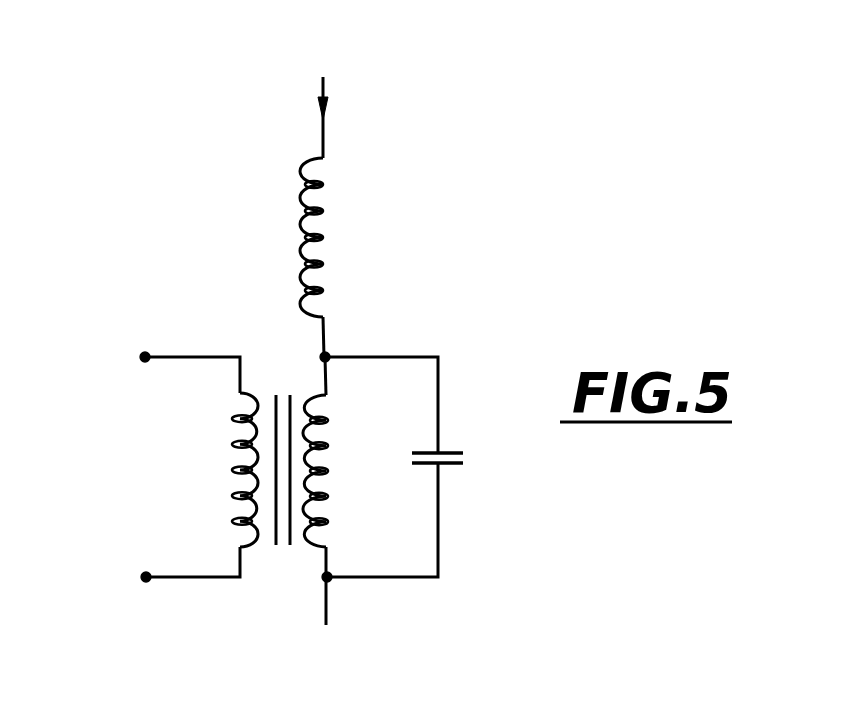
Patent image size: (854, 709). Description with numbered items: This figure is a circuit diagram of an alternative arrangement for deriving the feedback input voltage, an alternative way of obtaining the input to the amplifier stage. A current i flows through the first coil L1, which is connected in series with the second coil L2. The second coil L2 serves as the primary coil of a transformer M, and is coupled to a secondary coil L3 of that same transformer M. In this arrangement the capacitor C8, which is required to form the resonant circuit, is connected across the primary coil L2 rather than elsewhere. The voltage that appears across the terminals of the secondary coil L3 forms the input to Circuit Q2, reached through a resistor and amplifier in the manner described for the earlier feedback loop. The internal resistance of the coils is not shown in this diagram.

The current i is at (333, 117).
The coil L1 is at (333, 257).
The second coil L2 is at (336, 486).
The secondary coil L3 is at (201, 467).
The capacitor C8 is at (403, 467).
The transformer M is at (279, 499).
The Circuit Q2 is at (170, 475).